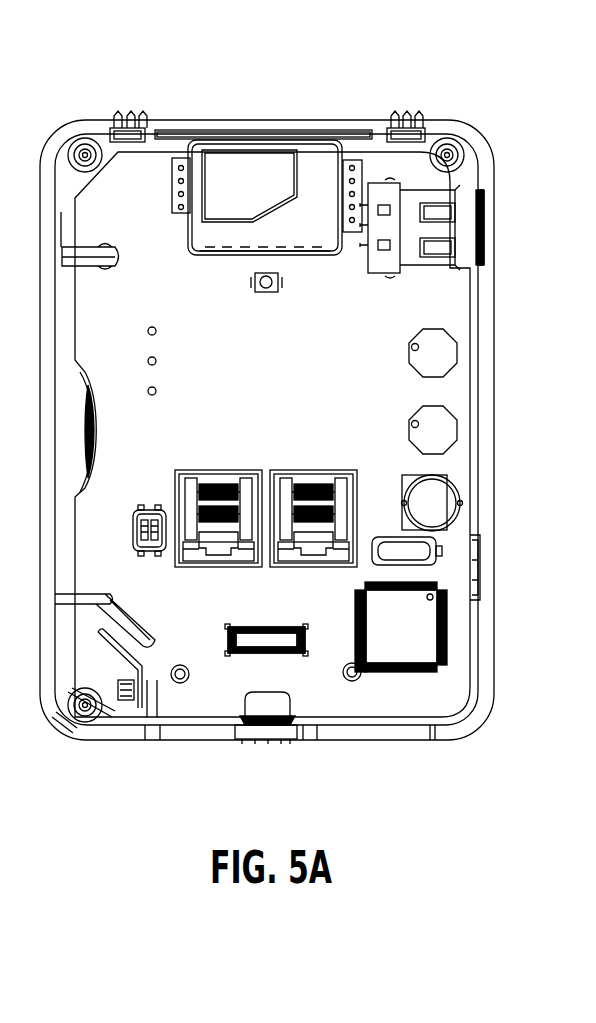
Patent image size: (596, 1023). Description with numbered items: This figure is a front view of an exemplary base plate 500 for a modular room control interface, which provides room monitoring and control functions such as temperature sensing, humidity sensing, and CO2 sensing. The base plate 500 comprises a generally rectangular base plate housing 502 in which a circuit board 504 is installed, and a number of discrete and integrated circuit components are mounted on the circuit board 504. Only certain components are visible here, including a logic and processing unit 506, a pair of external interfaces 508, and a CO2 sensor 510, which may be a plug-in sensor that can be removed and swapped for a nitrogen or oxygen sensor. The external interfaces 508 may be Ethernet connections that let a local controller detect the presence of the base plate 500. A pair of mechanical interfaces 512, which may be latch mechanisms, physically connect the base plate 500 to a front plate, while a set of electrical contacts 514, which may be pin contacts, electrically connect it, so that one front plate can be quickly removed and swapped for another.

The base plate 500 is at (233, 56).
The base plate housing 502 is at (493, 296).
The circuit board 504 is at (289, 435).
The logic and processing unit 506 is at (355, 596).
The external interfaces 508 is at (215, 470).
The CO2 sensor 510 is at (236, 160).
The mechanical interfaces 512 is at (125, 120).
The electrical contacts 514 is at (347, 236).